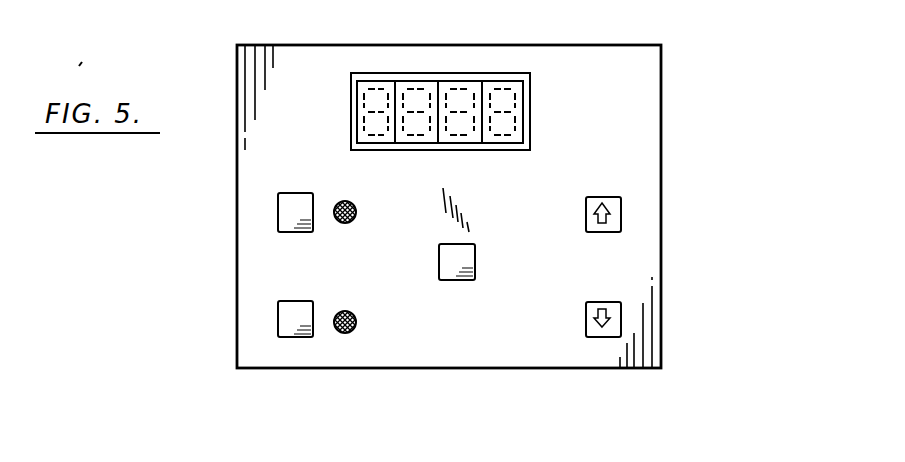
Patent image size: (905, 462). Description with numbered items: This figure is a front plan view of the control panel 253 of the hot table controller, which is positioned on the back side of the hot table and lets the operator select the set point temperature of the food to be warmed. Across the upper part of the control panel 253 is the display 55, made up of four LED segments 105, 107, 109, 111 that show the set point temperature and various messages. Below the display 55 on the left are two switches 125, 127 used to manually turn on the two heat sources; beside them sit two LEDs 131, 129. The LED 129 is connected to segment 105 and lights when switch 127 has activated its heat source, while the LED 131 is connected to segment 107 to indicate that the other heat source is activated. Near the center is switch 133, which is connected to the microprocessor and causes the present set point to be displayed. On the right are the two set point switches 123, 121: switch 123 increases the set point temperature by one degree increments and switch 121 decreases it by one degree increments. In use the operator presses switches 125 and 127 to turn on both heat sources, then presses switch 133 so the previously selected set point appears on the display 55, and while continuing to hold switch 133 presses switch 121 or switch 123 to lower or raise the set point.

The control panel 253 is at (680, 150).
The display 55 is at (545, 102).
The LED segment 105 is at (357, 125).
The LED segment 107 is at (405, 142).
The LED segment 109 is at (478, 142).
The LED segment 111 is at (518, 137).
The switch 125 is at (285, 214).
The switch 127 is at (285, 318).
The switch 133 is at (457, 283).
The switch 123 is at (613, 219).
The switch 121 is at (613, 322).
The LED 131 is at (353, 220).
The LED 129 is at (357, 322).